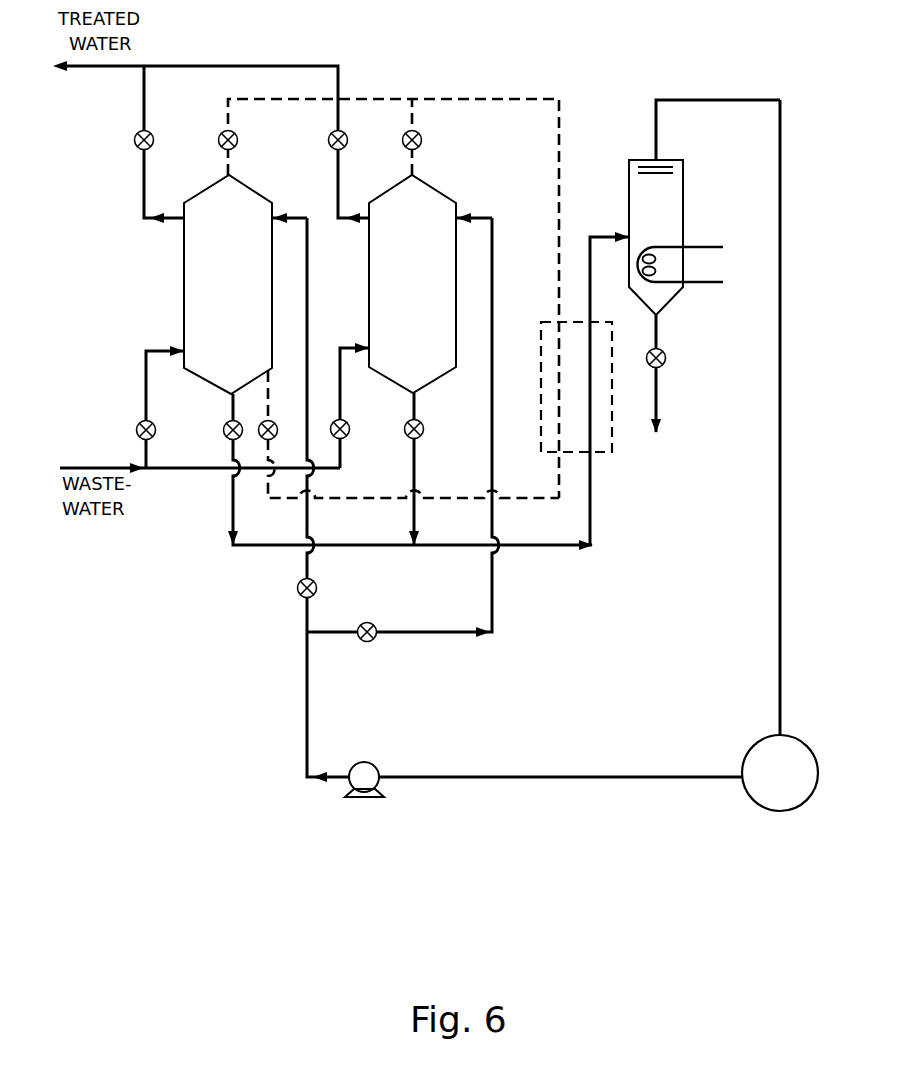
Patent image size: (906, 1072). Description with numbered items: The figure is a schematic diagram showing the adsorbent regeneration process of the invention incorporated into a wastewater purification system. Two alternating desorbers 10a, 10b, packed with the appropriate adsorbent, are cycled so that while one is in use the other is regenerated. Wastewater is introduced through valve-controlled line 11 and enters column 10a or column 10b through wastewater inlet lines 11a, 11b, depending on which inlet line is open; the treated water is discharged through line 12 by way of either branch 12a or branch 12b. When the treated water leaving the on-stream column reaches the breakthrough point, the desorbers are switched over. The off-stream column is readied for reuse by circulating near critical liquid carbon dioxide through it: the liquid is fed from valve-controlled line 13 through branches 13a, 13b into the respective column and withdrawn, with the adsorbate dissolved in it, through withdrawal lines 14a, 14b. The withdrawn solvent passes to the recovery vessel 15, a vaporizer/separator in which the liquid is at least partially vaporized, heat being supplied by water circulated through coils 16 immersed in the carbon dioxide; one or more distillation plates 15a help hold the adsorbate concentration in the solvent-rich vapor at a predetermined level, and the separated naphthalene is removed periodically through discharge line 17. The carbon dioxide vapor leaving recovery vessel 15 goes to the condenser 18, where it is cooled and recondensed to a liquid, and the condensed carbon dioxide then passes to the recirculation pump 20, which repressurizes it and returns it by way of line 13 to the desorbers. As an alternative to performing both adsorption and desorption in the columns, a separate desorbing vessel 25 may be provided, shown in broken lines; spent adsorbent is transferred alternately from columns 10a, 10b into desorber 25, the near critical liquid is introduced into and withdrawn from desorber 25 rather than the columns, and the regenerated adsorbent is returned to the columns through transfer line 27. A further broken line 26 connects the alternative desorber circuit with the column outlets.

The desorber 10a is at (244, 298).
The desorber 10b is at (429, 298).
The valve-controlled line 11 is at (170, 468).
The wastewater inlet line 11a is at (143, 395).
The wastewater inlet line 11b is at (342, 394).
The valve-controlled line 12 is at (228, 66).
The treated water discharge line 12a is at (147, 163).
The treated water discharge line 12b is at (341, 163).
The valve-controlled line 13 is at (305, 665).
The near critical liquid feed line 13a is at (309, 283).
The near critical liquid feed line 13b is at (494, 283).
The valve-controlled withdrawal line 14a is at (230, 518).
The valve-controlled withdrawal line 14b is at (410, 518).
The recovery vessel 15 is at (672, 213).
The distillation plate 15a is at (663, 166).
The coils 16 is at (695, 286).
The discharge line 17 is at (659, 400).
The condenser 18 is at (772, 745).
The recirculation pump 20 is at (366, 772).
The desorbing vessel 25 is at (612, 445).
The dashed bypass line 26 is at (526, 500).
The transfer line 27 is at (445, 97).